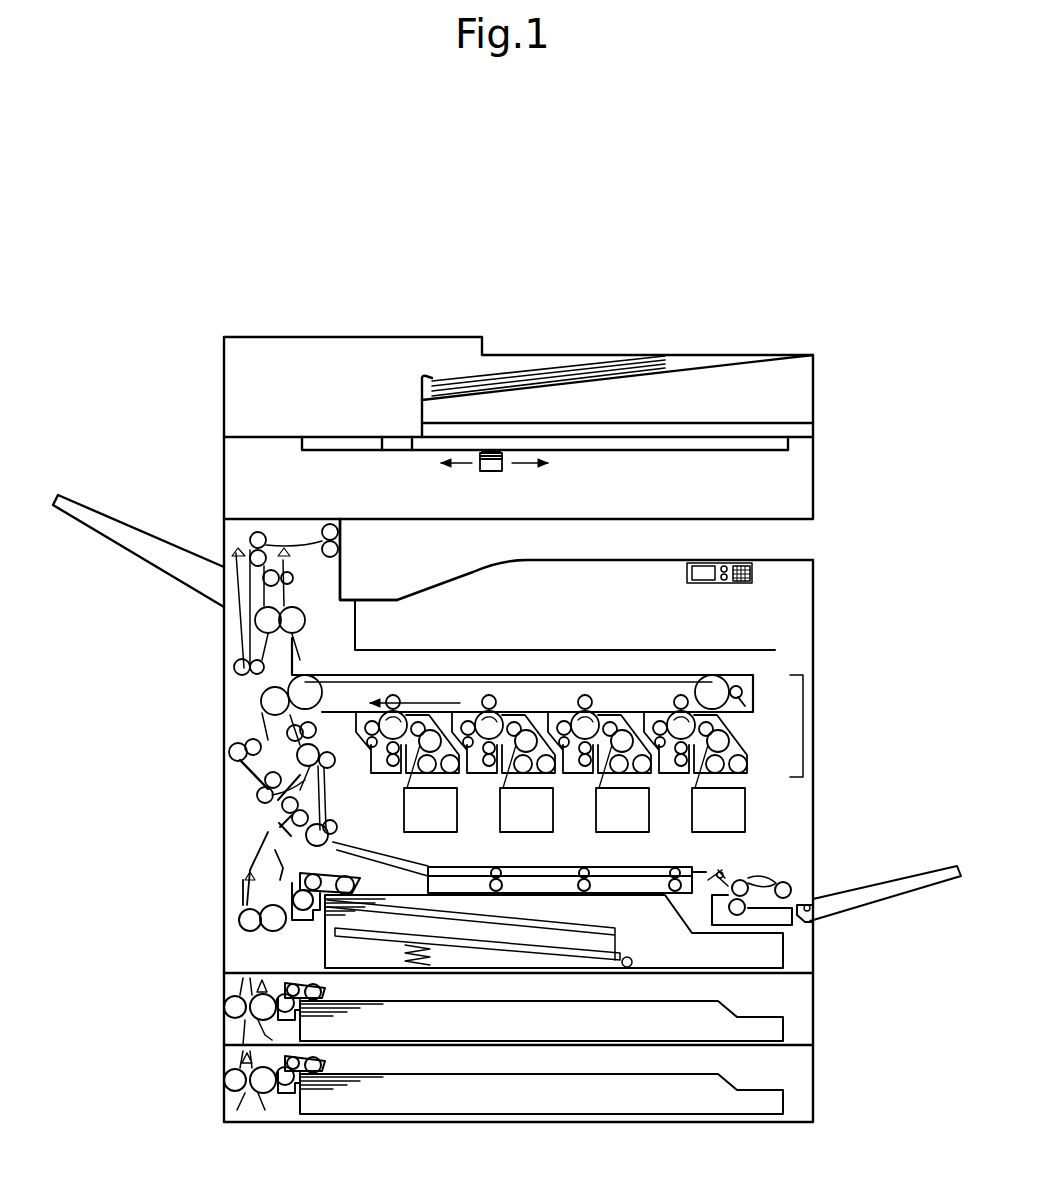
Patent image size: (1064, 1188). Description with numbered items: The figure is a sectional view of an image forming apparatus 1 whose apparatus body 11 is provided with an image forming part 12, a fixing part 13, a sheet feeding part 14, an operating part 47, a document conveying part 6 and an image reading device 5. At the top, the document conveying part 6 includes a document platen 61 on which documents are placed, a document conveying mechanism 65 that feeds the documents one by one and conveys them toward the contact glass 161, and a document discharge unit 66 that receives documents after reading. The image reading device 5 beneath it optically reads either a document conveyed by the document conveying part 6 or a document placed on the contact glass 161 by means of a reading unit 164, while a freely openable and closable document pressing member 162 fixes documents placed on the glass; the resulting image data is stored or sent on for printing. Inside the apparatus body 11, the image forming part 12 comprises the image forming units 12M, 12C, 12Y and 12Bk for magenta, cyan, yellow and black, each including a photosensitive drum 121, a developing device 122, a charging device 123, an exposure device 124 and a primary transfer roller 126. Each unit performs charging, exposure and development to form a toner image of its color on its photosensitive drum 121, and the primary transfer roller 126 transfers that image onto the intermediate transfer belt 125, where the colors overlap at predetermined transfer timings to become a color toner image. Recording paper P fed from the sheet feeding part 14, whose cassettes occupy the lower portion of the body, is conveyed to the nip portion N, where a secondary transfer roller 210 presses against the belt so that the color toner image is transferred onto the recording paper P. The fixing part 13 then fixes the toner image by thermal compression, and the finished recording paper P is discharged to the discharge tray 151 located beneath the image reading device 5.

The image forming apparatus 1 is at (895, 411).
The image reading device 5 is at (200, 468).
The document conveying part 6 is at (652, 333).
The document platen 61 is at (752, 356).
The document conveying mechanism 65 is at (320, 402).
The document discharge unit 66 is at (750, 425).
The contact glass 161 is at (710, 444).
The document pressing member 162 is at (612, 428).
The reading unit 164 is at (501, 470).
The apparatus body 11 is at (818, 586).
The discharge tray 151 is at (385, 600).
The operating part 47 is at (752, 583).
The image forming part 12 is at (775, 714).
The image forming unit for black 12Bk is at (396, 704).
The image forming unit for yellow 12Y is at (503, 713).
The image forming unit for cyan 12C is at (599, 725).
The image forming unit for magenta 12M is at (695, 711).
The photosensitive drum 121 is at (676, 776).
The developing device 122 is at (722, 768).
The charging device 123 is at (668, 776).
The exposure device 124 is at (742, 818).
The intermediate transfer belt 125 is at (701, 689).
The primary transfer roller 126 is at (672, 718).
The fixing part 13 is at (247, 622).
The nip portion N is at (262, 667).
The secondary transfer roller 210 is at (283, 748).
The sheet feeding part 14 is at (795, 1000).
The recording paper P is at (600, 916).